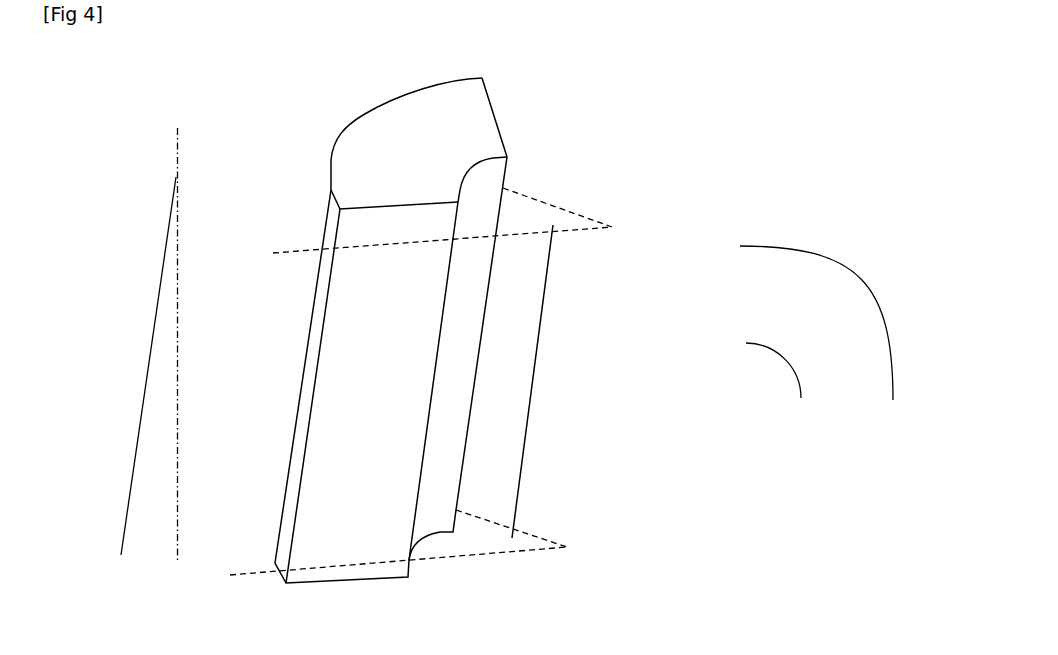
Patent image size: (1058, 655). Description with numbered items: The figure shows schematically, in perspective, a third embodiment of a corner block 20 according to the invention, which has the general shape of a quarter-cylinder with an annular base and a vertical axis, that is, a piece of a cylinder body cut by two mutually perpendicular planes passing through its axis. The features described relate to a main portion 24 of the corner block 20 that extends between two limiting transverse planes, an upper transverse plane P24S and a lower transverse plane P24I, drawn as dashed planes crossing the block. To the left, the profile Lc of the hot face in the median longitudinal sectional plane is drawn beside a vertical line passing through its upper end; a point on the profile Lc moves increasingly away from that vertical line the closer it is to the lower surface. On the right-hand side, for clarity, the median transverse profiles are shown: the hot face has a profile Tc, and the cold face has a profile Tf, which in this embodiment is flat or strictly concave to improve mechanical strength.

The corner block 20 is at (462, 315).
The main portion 24 is at (533, 382).
The upper transverse plane P24S is at (553, 226).
The lower transverse plane P24I is at (512, 538).
The profile of the hot face Lc is at (159, 292).
The profile of the hot face in the median transverse plane Tc is at (889, 334).
The profile of the cold face Tf is at (800, 397).